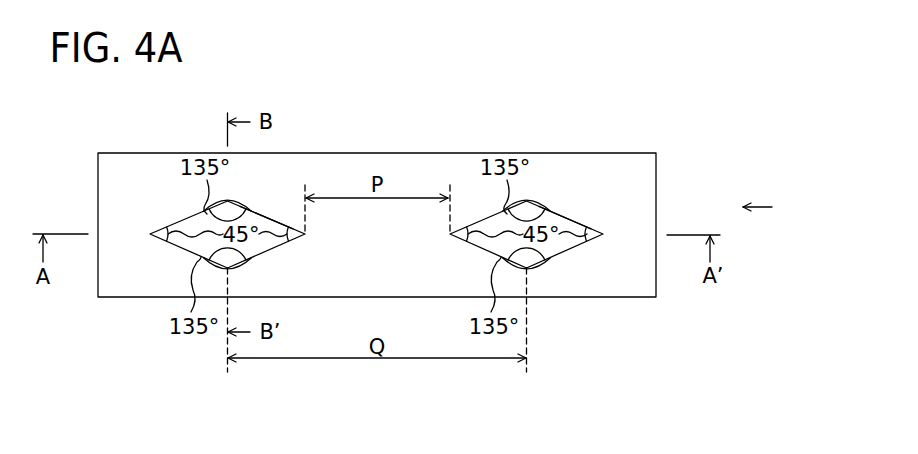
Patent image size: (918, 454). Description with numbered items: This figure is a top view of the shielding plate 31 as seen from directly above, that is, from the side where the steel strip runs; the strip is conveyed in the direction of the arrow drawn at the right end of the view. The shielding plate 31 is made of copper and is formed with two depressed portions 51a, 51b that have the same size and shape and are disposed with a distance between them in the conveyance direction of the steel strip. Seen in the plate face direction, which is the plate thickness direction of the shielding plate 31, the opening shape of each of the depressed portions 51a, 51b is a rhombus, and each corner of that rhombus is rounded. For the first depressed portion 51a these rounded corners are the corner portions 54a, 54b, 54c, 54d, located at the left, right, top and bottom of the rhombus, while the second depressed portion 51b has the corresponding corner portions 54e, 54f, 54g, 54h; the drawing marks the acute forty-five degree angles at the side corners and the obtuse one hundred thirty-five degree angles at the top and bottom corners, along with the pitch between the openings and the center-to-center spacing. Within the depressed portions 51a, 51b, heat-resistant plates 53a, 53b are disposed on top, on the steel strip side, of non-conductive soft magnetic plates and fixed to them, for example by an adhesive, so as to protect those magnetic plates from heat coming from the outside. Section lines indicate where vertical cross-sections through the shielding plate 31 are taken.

The shielding plate 31 is at (381, 153).
The depressed portion 51a is at (178, 208).
The depressed portion 51b is at (477, 208).
The heat-resistant plate 53a is at (253, 212).
The heat-resistant plate 53b is at (551, 212).
The corner portion 54a is at (147, 234).
The corner portion 54b is at (308, 235).
The corner portion 54c is at (230, 198).
The corner portion 54d is at (237, 271).
The corner portion 54e is at (446, 235).
The corner portion 54f is at (608, 235).
The corner portion 54g is at (528, 198).
The corner portion 54h is at (536, 271).